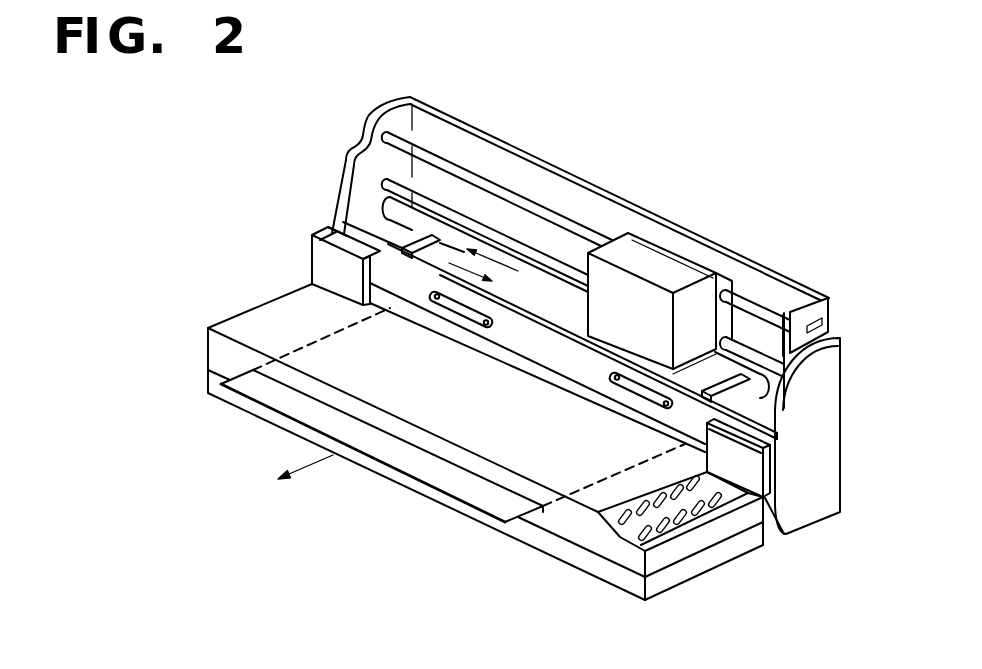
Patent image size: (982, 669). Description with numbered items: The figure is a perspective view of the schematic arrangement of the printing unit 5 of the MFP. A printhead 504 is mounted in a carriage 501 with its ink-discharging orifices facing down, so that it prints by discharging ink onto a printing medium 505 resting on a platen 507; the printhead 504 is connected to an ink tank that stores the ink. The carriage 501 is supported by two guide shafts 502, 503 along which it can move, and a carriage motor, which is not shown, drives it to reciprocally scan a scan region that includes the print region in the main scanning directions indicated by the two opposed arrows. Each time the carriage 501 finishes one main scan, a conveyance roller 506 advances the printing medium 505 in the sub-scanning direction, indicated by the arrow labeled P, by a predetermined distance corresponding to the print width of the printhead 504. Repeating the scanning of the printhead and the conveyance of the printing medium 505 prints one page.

The printing unit 5 is at (563, 33).
The carriage 501 is at (724, 316).
The guide shaft 502 is at (465, 170).
The guide shaft 503 is at (500, 237).
The printhead 504 is at (660, 263).
The printing medium 505 is at (465, 483).
The conveyance roller 506 is at (761, 378).
The platen 507 is at (405, 245).